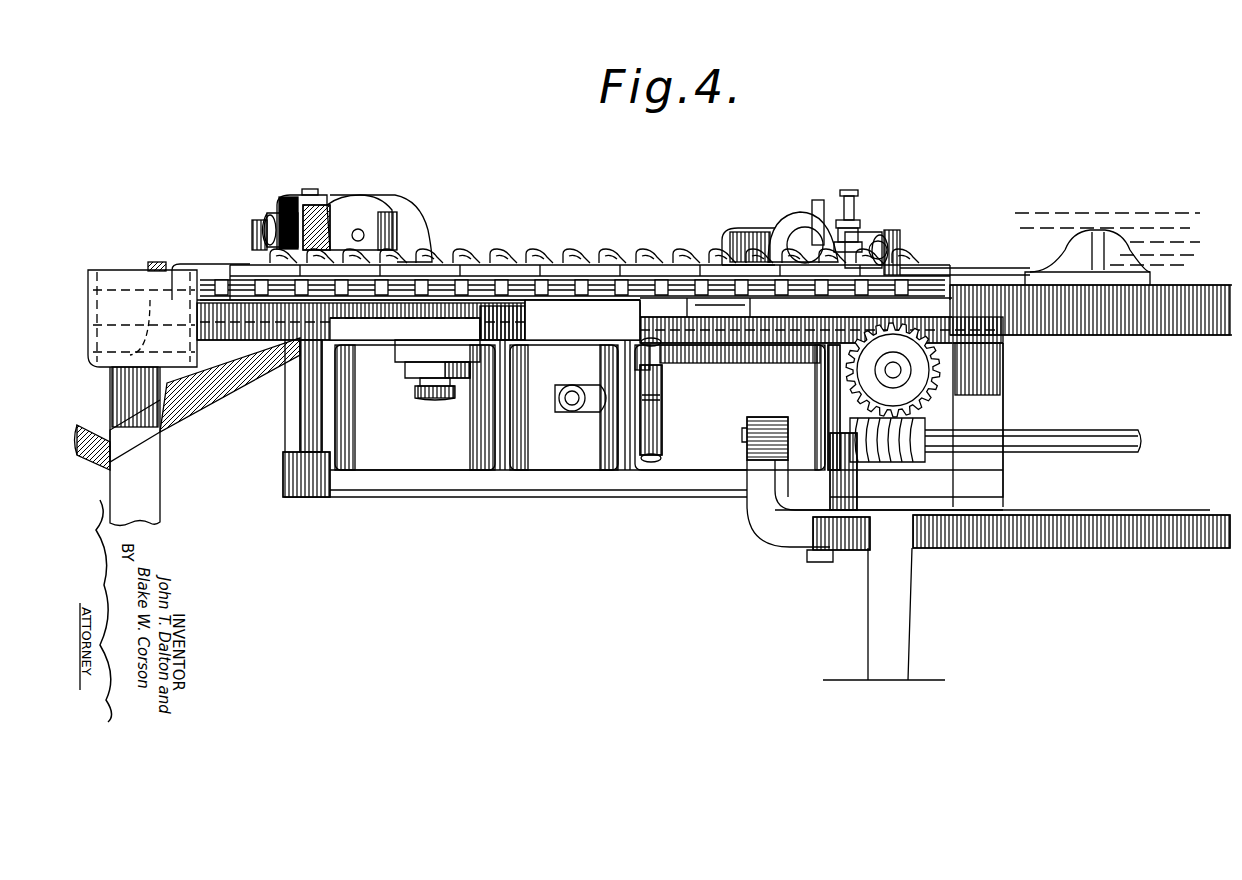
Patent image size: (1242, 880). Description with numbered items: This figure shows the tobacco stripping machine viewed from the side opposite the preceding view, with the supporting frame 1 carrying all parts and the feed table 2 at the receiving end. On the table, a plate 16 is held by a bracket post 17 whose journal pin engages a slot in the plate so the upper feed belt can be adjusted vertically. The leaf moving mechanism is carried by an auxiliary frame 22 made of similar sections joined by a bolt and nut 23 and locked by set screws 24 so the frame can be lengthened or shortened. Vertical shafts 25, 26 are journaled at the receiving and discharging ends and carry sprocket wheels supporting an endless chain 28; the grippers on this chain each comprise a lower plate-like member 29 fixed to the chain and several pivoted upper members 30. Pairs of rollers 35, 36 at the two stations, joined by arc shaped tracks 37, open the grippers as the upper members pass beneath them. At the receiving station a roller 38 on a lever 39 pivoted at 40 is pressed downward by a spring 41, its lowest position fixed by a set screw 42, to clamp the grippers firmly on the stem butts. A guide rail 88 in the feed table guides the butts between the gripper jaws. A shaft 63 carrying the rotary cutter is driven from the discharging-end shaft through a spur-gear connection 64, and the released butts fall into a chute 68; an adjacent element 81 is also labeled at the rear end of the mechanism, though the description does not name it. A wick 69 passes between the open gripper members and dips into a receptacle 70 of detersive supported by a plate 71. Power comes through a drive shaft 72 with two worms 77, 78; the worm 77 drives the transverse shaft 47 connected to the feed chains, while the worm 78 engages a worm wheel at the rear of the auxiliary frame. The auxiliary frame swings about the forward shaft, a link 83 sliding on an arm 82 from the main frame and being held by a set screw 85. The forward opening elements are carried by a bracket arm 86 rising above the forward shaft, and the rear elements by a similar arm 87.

The supporting frame 1 is at (1040, 548).
The feed table 2 is at (1188, 285).
The plate 16 is at (1058, 220).
The bracket post 17 is at (1102, 232).
The auxiliary frame 22 is at (370, 340).
The bolt and nut 23 is at (570, 410).
The set screws 24 is at (660, 455).
The shaft 25 is at (830, 380).
The shaft 26 is at (311, 189).
The endless chain 28 is at (580, 300).
The lower plate-like member 29 is at (578, 290).
The upper members 30 is at (545, 258).
The rollers 35 is at (870, 240).
The rollers 36 is at (275, 215).
The arc shaped tracks 37 is at (252, 235).
The roller 38 is at (793, 212).
The lever 39 is at (842, 220).
The pivot 40 is at (818, 200).
The spring 41 is at (860, 212).
The set screw 42 is at (858, 192).
The shaft 47 is at (900, 372).
The shaft 63 is at (362, 229).
The spur-gear connection 64 is at (395, 215).
The chute 68 is at (205, 405).
The wick 69 is at (157, 262).
The receptacle 70 is at (103, 270).
The plate 71 is at (178, 264).
The drive shaft 72 is at (1060, 432).
The worm 77 is at (895, 462).
The worm 78 is at (848, 462).
The housing 81 is at (330, 218).
The arm 82 is at (403, 362).
The link 83 is at (445, 378).
The set screw 85 is at (430, 400).
The bracket arm 86 is at (738, 228).
The arm 87 is at (430, 222).
The guide rail 88 is at (982, 282).